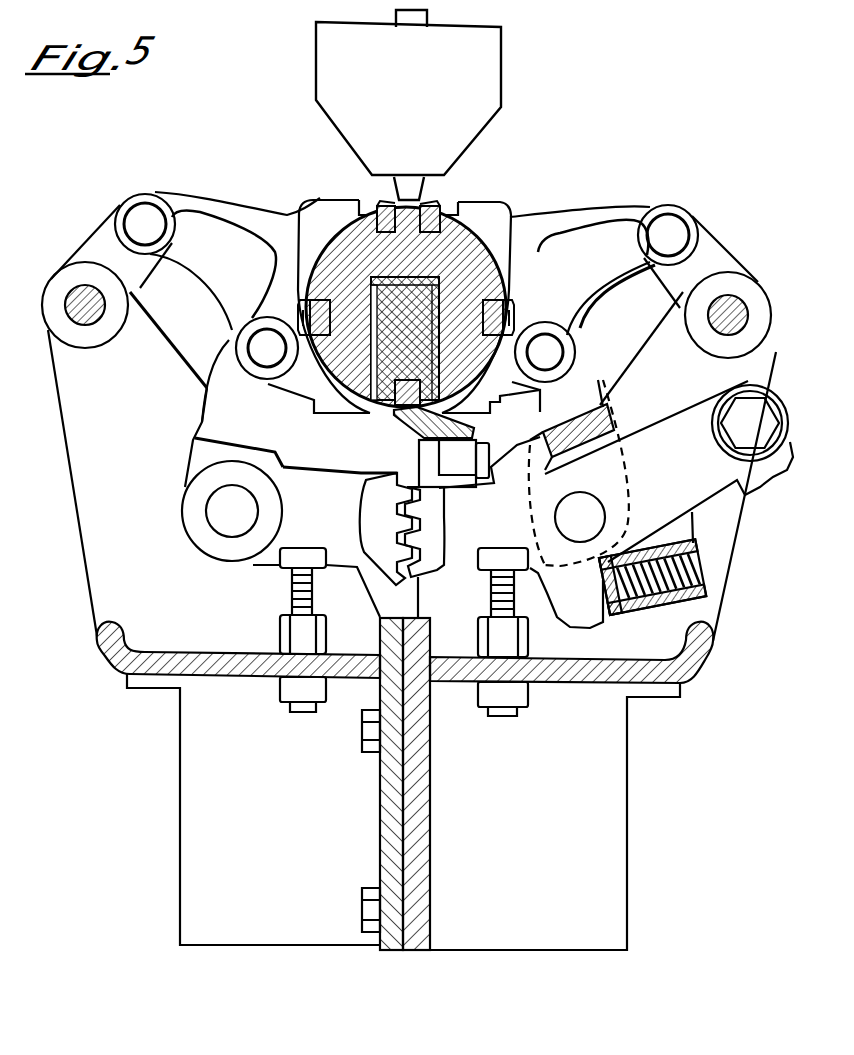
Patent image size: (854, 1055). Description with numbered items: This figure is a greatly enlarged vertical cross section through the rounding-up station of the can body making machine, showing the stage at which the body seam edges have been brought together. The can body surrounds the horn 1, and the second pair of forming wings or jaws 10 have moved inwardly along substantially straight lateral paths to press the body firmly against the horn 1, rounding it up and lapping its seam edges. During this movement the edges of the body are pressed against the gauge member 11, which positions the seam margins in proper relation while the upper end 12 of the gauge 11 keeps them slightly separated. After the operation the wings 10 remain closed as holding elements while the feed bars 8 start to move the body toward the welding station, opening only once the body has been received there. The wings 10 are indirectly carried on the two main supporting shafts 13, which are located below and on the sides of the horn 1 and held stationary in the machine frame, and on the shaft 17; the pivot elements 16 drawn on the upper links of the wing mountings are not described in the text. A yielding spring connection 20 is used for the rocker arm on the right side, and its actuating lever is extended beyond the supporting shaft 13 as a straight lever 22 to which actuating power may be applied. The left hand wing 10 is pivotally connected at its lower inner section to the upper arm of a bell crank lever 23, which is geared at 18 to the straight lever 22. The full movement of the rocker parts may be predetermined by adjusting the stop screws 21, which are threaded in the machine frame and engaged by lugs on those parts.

The horn 1 is at (506, 223).
The feed bars 8 is at (377, 200).
The forming wings 10 is at (318, 206).
The gauge member 11 is at (416, 425).
The upper end of gauge 12 is at (404, 413).
The main supporting shafts 13 is at (223, 515).
The pivot links 16 is at (107, 245).
The shaft 17 is at (80, 290).
The gearing 18 is at (399, 528).
The spring connection 20 is at (658, 613).
The stop screws 21 is at (284, 597).
The straight lever 22 is at (669, 471).
The bell crank lever 23 is at (222, 415).